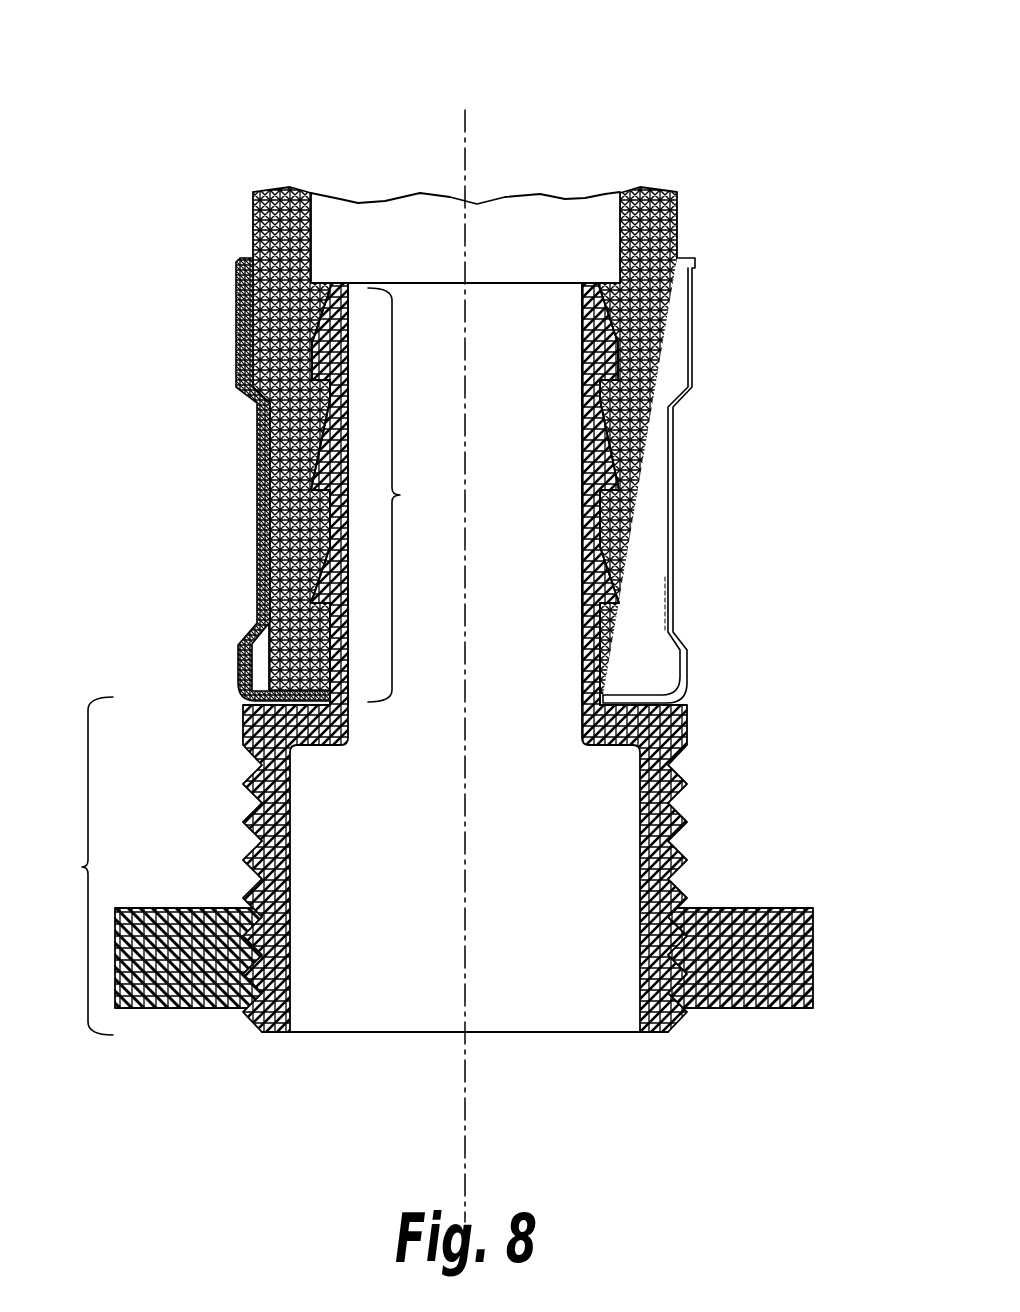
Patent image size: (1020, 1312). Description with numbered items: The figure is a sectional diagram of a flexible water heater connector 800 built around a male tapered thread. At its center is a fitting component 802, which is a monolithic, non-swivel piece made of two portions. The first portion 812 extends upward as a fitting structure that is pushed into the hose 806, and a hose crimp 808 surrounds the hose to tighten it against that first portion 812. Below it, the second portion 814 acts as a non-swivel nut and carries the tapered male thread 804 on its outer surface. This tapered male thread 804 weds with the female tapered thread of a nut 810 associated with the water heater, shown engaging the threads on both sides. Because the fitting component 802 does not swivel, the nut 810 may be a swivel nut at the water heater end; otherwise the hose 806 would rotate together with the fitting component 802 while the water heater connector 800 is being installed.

The flexible water heater connector 800 is at (573, 147).
The fitting component 802 is at (333, 522).
The tapered male thread 804 is at (680, 877).
The hose 806 is at (657, 237).
The hose crimp 808 is at (667, 543).
The nut 810 is at (733, 909).
The first portion 812 is at (402, 495).
The second portion 814 is at (80, 867).